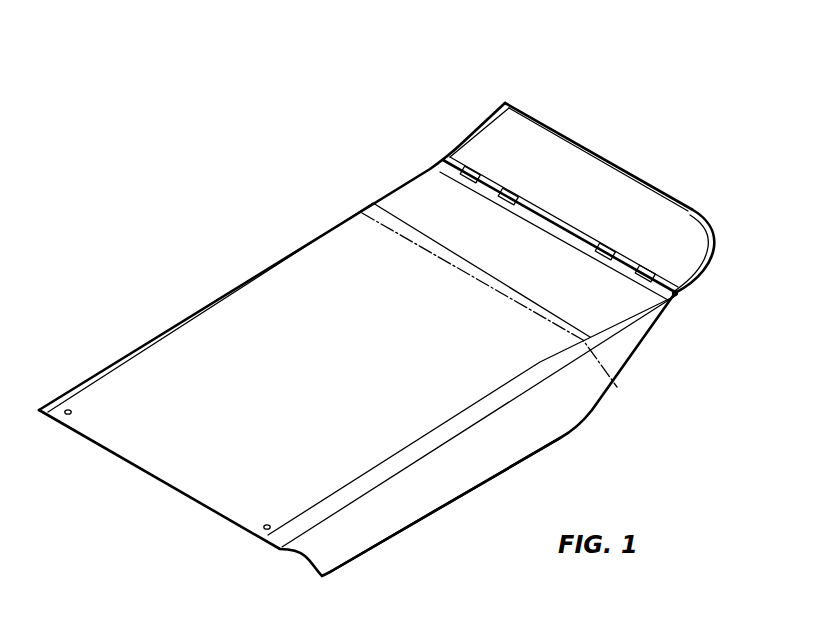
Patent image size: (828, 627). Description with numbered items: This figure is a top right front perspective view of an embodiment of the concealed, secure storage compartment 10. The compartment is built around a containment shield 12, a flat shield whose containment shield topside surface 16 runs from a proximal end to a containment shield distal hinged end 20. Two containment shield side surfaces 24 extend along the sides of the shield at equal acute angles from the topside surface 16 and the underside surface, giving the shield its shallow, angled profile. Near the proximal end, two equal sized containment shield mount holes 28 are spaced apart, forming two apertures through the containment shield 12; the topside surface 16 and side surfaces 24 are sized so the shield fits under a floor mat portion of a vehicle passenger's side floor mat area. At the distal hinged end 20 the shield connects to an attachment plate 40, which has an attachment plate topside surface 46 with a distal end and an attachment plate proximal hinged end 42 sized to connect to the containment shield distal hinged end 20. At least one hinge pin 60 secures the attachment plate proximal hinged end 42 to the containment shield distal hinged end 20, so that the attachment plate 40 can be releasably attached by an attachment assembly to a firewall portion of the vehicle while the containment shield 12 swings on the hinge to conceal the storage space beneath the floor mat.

The concealed, secure storage compartment 10 is at (376, 333).
The containment shield 12 is at (365, 333).
The containment shield topside surface 16 is at (305, 325).
The containment shield distal hinged end 20 is at (525, 239).
The containment shield side surface 24 is at (440, 498).
The containment shield mount holes 28 is at (68, 418).
The attachment plate 40 is at (582, 234).
The attachment plate proximal hinged end 42 is at (466, 176).
The attachment plate topside surface 46 is at (613, 178).
The hinge pin 60 is at (676, 300).